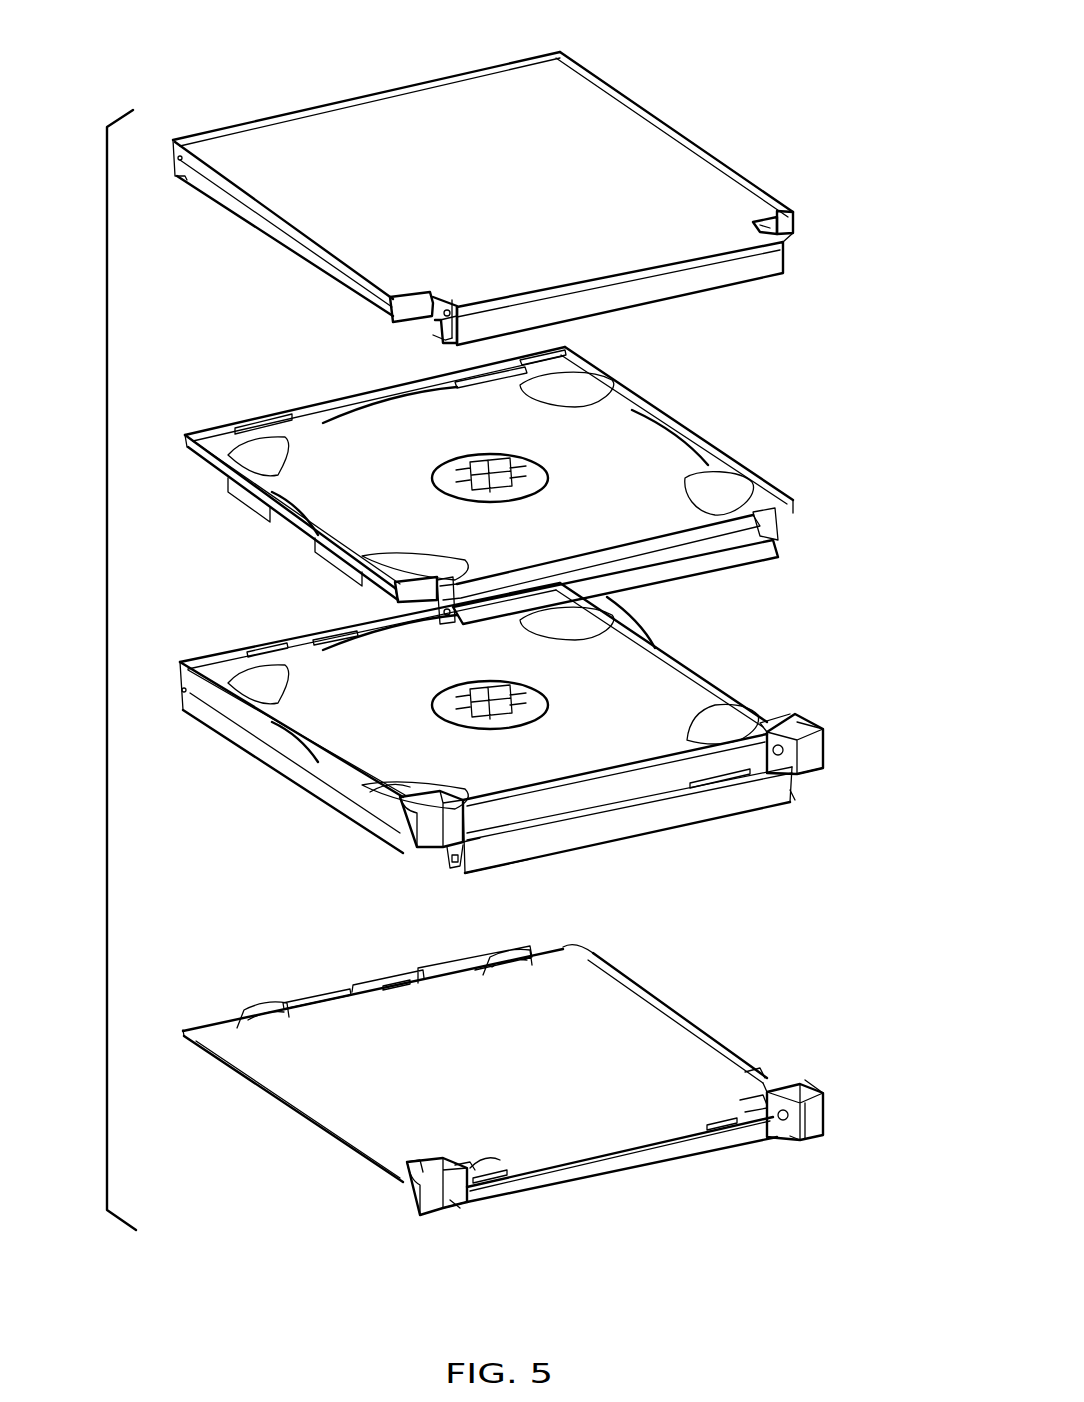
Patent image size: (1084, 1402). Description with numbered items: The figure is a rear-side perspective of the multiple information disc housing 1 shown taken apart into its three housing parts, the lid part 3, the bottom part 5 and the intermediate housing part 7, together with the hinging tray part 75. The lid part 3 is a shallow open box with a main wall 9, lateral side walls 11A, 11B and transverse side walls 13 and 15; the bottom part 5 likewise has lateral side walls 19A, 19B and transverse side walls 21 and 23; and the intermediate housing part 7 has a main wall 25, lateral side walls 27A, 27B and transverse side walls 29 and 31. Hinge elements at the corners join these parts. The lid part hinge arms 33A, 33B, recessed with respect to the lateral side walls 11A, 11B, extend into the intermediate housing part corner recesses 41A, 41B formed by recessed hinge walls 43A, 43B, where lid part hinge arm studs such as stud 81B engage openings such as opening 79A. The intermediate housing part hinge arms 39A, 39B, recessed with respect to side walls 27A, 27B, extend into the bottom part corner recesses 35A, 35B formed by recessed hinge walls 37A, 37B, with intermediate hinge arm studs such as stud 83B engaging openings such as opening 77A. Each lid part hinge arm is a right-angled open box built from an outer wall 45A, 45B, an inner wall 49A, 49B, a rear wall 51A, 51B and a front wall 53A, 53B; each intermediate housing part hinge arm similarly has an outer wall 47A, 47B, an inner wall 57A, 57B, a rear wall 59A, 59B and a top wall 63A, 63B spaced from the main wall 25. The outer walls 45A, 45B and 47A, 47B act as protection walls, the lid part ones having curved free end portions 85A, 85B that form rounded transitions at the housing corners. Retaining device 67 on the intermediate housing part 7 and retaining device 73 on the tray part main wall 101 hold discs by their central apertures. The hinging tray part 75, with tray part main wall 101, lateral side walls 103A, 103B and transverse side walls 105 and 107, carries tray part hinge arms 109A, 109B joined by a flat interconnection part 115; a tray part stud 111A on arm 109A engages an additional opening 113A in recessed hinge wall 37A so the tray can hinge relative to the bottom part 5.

The housing 1 is at (107, 660).
The lid part 3 is at (718, 1010).
The bottom part 5 is at (704, 120).
The intermediate housing part 7 is at (757, 651).
The first housing part main wall 9 is at (640, 1015).
The first housing part lateral side wall 11A is at (280, 1112).
The first housing part lateral side wall 11B is at (728, 1040).
The first housing part transverse side wall 13 is at (377, 975).
The first housing part transverse side wall 15 is at (618, 1147).
The second housing part lateral side wall 19A is at (290, 243).
The second housing part lateral side wall 19B is at (742, 165).
The second housing part transverse side wall 21 is at (372, 96).
The second housing part transverse side wall 23 is at (730, 273).
The intermediate housing part main wall 25 is at (680, 647).
The intermediate housing part lateral side wall 27A is at (315, 790).
The intermediate housing part lateral side wall 27B is at (735, 682).
The intermediate housing part transverse side wall 29 is at (255, 640).
The intermediate housing part transverse side wall 31 is at (676, 815).
The lid part hinge arm 33A is at (455, 1216).
The lid part hinge arm 33B is at (778, 1140).
The bottom part corner recess 35A is at (427, 324).
The bottom part corner recess 35B is at (795, 245).
The bottom part recessed hinge wall 37A is at (430, 338).
The bottom part recessed hinge wall 37B is at (770, 216).
The intermediate housing part hinge arm 39A is at (428, 862).
The intermediate housing part hinge arm 39B is at (822, 760).
The intermediate housing part corner recess 41A is at (418, 867).
The intermediate housing part corner recess 41B is at (815, 785).
The intermediate housing part recessed hinge wall 43A is at (452, 866).
The intermediate housing part recessed hinge wall 43B is at (792, 792).
The lid part hinge arm protection wall 45A is at (410, 1190).
The lid part hinge arm protection wall 45B is at (815, 1088).
The intermediate housing part hinge arm protection wall 47A is at (405, 832).
The intermediate housing part hinge arm protection wall 47B is at (818, 722).
The inner lid part hinge arm wall 49A is at (460, 1170).
The inner lid part hinge arm wall 49B is at (752, 1106).
The rear lid part hinge arm wall 51A is at (450, 1222).
The rear lid part hinge arm wall 51B is at (795, 1142).
The front lid part hinge arm wall 53A is at (415, 1165).
The front lid part hinge arm wall 53B is at (793, 1082).
The inner intermediate housing part hinge arm wall 57A is at (466, 793).
The inner intermediate housing part hinge arm wall 57B is at (700, 727).
The rear intermediate housing part hinge arm wall 59A is at (525, 863).
The rear intermediate housing part hinge arm wall 59B is at (800, 778).
The top intermediate housing part hinge arm wall 63A is at (420, 800).
The top intermediate housing part hinge arm wall 63B is at (800, 712).
The retaining device 67 is at (520, 686).
The retaining device 73 is at (520, 458).
The hinging tray part 75 is at (690, 428).
The bottom recessed hinge wall opening 77A is at (437, 335).
The intermediate housing part recessed hinge wall opening 79A is at (480, 860).
The lid part hinge arm stud 81B is at (777, 1123).
The intermediate hinge arm stud 83B is at (745, 800).
The lid part hinge arm free end portion 85A is at (430, 1225).
The lid part hinge arm free end portion 85B is at (825, 1117).
The tray part main wall 101 is at (672, 450).
The tray part lateral side wall 103A is at (332, 565).
The tray part lateral side wall 103B is at (760, 475).
The tray part transverse side wall 105 is at (228, 422).
The tray part transverse side wall 107 is at (768, 531).
The tray part hinge arm 109A is at (446, 625).
The tray part hinge arm 109B is at (770, 548).
The hinging tray part stud 111A is at (437, 600).
The additional bottom recessed hinge wall opening 113A is at (443, 327).
The flat interconnection part 115 is at (675, 580).